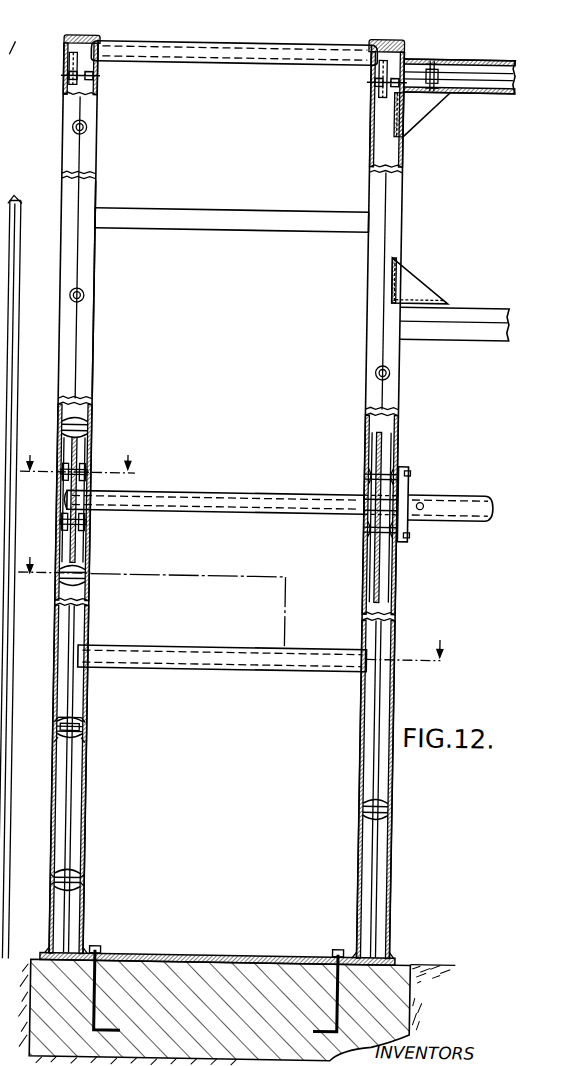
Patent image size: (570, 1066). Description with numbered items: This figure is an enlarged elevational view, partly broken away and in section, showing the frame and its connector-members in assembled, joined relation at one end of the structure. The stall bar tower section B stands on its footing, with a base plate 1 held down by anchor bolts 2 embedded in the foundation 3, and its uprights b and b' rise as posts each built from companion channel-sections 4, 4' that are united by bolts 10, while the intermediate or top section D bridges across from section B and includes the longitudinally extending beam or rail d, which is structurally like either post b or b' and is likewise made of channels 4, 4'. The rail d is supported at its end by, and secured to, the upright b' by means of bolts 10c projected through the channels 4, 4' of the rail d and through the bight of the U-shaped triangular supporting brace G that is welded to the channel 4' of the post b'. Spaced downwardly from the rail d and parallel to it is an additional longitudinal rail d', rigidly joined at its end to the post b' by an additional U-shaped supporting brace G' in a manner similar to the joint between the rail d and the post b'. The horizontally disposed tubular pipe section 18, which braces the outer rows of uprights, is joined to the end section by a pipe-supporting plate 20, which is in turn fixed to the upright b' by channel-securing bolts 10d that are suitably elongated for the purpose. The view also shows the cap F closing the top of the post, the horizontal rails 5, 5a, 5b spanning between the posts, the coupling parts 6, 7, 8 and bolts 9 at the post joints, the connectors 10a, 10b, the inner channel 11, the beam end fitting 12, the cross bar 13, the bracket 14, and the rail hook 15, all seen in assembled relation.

The base plate 1 is at (213, 958).
The anchor bolt 2 is at (105, 978).
The concrete foundation 3 is at (233, 990).
The channel-section 4 is at (264, 501).
The channel-section 4' is at (261, 499).
The horizontal beam 5 is at (214, 231).
The horizontal beam 5a is at (250, 495).
The top beam 5b is at (219, 52).
The coupling member 6 is at (92, 738).
The coupling plate 7 is at (89, 732).
The coupling flange 8 is at (86, 728).
The bolt 9 is at (80, 133).
The bolt 10 is at (57, 430).
The connector 10a is at (60, 525).
The connector 10b is at (366, 83).
The bolt 10c is at (425, 59).
The channel-securing bolt 10d is at (351, 563).
The inner channel 11 is at (364, 465).
The beam end fitting 12 is at (78, 510).
The cross bar 13 is at (80, 472).
The bracket 14 is at (86, 89).
The beam hook 15 is at (90, 49).
The tubular pipe section 18 is at (445, 516).
The pipe-supporting plate 20 is at (404, 465).
The stall bar tower section B is at (91, 348).
The intermediate or top section D is at (470, 56).
The beam or rail d is at (459, 106).
The longitudinal rail d' is at (455, 301).
The cap F is at (72, 38).
The U-shaped triangular supporting brace G is at (426, 118).
The U-shaped supporting brace G' is at (428, 279).
The post b is at (95, 779).
The upright or post b' is at (346, 788).